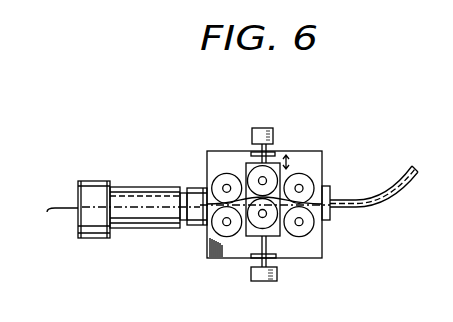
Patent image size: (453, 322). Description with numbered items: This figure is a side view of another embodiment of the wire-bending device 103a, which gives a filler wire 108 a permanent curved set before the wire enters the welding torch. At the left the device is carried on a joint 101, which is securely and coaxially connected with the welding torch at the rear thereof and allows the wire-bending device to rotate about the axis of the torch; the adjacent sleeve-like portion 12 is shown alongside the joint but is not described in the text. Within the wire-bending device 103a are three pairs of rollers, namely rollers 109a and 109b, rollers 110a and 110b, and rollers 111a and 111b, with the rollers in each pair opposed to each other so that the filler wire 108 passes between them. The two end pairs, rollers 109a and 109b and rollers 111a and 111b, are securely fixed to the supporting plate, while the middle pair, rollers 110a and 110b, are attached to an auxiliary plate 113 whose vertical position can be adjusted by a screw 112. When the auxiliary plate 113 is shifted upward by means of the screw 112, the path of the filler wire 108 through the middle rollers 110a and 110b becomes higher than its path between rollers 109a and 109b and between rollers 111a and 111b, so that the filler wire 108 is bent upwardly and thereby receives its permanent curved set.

The sleeve 12 is at (128, 223).
The joint 101 is at (177, 216).
The wire-bending device 103a is at (297, 150).
The filler wire 108 is at (51, 204).
The roller 109a is at (217, 176).
The roller 109b is at (216, 230).
The roller 110a is at (249, 167).
The roller 110b is at (269, 224).
The roller 111a is at (312, 178).
The roller 111b is at (312, 228).
The screw 112 is at (267, 128).
The auxiliary plate 113 is at (250, 226).